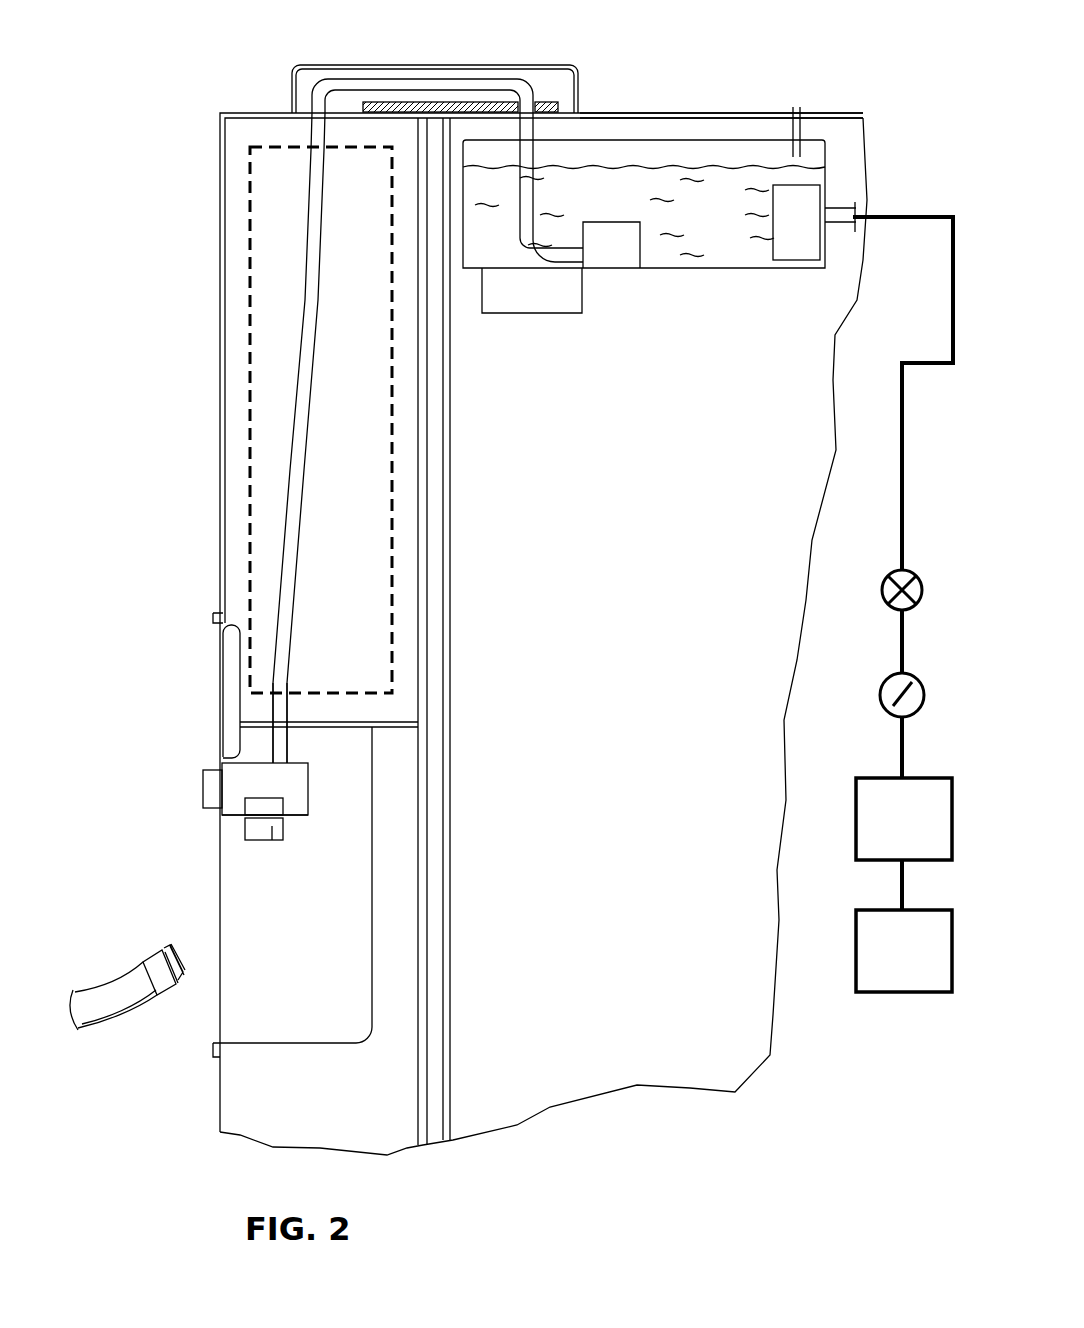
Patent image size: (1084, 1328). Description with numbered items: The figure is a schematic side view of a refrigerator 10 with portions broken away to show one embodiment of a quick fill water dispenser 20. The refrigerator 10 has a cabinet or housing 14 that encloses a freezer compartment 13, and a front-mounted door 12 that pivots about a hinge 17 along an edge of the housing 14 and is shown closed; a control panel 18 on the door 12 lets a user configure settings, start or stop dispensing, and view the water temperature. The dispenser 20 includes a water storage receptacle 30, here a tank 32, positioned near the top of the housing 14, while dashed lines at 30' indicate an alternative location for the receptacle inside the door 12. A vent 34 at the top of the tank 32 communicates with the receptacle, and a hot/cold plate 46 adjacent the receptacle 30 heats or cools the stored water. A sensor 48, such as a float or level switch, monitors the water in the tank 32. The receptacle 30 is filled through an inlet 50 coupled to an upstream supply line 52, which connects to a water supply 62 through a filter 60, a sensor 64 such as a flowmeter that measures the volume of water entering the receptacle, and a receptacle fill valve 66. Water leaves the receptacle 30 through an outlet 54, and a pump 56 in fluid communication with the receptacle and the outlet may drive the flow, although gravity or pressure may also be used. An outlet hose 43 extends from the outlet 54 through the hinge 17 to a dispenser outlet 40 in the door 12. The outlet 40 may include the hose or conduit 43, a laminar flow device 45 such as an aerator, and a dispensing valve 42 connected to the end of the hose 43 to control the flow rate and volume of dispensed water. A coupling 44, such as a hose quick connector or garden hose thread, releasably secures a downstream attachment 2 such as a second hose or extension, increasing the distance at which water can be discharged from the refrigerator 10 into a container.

The downstream attachment 2 is at (118, 995).
The refrigerator 10 is at (126, 121).
The door 12 is at (240, 104).
The freezer compartment 13 is at (752, 422).
The cabinet or housing 14 is at (630, 111).
The hinge 17 is at (556, 98).
The control panel 18 is at (211, 684).
The water dispenser 20 is at (185, 795).
The water storage receptacle 30 is at (484, 315).
The water storage receptacle (door position) 30' is at (260, 420).
The tank 32 is at (705, 145).
The vent 34 is at (797, 106).
The outlet 40 is at (318, 821).
The dispensing valve 42 is at (300, 789).
The outlet hose 43 is at (243, 745).
The coupling 44 is at (284, 842).
The laminar flow device 45 is at (248, 808).
The hot/cold plate 46 is at (532, 302).
The sensor 48 is at (795, 255).
The inlet 50 is at (843, 238).
The supply line 52 is at (840, 212).
The outlet 54 is at (524, 146).
The pump 56 is at (611, 245).
The filter 60 is at (904, 844).
The water supply 62 is at (904, 951).
The sensor 64 is at (880, 699).
The receptacle fill valve 66 is at (883, 603).